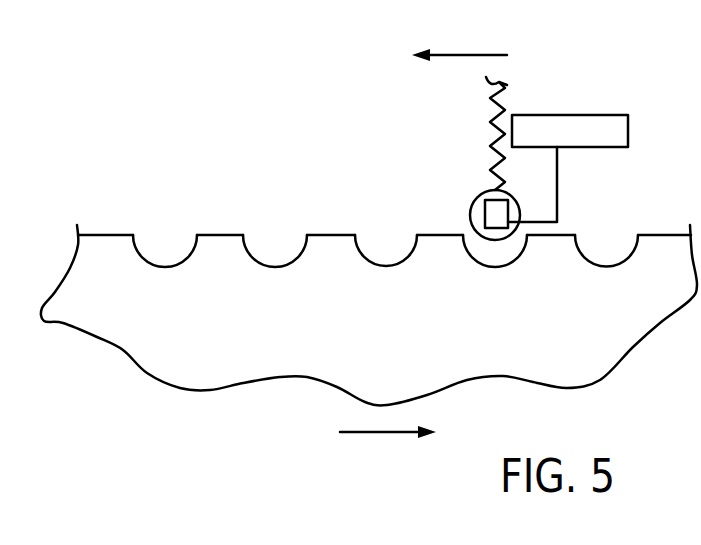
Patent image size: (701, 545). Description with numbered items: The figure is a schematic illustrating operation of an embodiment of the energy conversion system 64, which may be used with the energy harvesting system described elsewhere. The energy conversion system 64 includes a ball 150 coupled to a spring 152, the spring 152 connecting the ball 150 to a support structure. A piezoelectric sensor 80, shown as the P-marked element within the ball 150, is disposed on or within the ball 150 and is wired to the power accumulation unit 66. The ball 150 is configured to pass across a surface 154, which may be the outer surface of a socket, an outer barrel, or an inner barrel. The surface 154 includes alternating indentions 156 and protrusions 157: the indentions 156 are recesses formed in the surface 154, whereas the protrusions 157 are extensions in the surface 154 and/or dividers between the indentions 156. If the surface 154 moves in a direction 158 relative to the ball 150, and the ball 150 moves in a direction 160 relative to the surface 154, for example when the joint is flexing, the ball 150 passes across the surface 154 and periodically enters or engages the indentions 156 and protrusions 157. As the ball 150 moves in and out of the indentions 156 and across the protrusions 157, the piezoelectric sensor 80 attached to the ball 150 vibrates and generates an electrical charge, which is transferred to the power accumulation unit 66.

The energy conversion system 64 is at (330, 98).
The power accumulation unit 66 is at (565, 115).
The piezoelectric sensor 80 is at (510, 223).
The ball 150 is at (478, 200).
The spring 152 is at (490, 130).
The surface 154 is at (110, 235).
The indentions 156 is at (167, 267).
The protrusions 157 is at (216, 235).
The direction 158 is at (380, 434).
The direction 160 is at (468, 55).